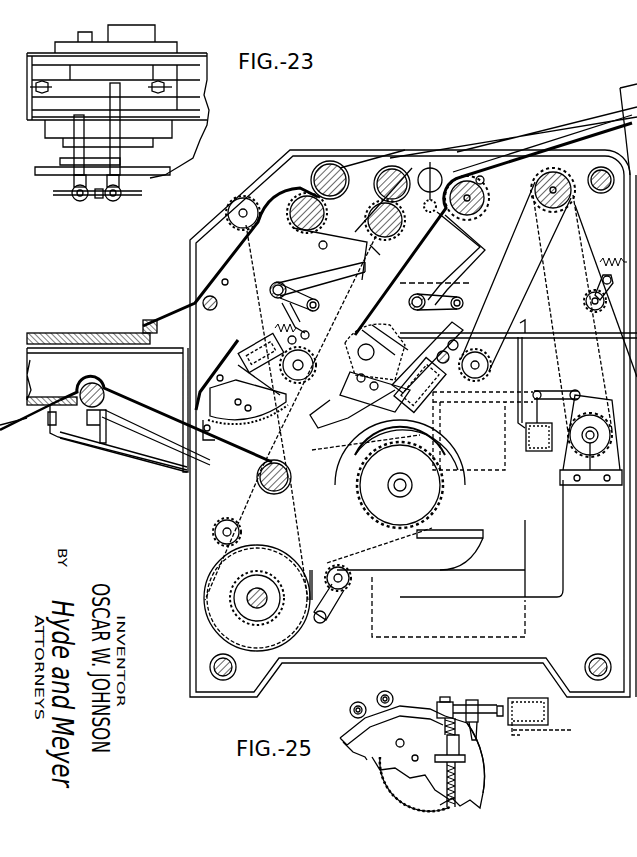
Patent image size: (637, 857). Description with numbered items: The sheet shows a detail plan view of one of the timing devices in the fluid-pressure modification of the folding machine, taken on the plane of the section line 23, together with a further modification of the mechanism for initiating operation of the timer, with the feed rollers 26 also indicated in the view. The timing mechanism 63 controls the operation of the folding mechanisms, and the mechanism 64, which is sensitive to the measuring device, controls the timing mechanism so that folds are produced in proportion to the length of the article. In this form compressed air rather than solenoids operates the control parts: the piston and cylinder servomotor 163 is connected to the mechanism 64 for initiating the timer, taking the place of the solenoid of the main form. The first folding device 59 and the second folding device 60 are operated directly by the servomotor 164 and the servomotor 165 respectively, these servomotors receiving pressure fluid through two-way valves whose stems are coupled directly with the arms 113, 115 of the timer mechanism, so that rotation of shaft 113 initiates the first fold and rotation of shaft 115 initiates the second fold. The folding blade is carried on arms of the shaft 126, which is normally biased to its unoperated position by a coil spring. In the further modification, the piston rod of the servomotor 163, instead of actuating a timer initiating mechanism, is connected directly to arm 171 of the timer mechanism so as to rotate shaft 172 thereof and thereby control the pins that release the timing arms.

In FIG. 23, the gripper fingers 23 is at (330, 347).
In FIG. 23, the feed rollers 26 is at (428, 284).
In FIG. 23, the first folding device 59 is at (499, 309).
In FIG. 23, the second folding device 60 is at (362, 309).
In FIG. 25, the timing mechanism 63 is at (367, 748).
In FIG. 23, the mechanism sensitive to the measuring device 64 is at (591, 454).
In FIG. 23, the shaft 113 is at (113, 131).
In FIG. 25, the shaft 113 is at (380, 696).
In FIG. 23, the shaft 115 is at (97, 146).
In FIG. 25, the shaft 115 is at (352, 703).
In FIG. 23, the shaft 126 is at (283, 284).
In FIG. 23, the piston and cylinder servomotor 163 is at (540, 452).
In FIG. 25, the piston and cylinder servomotor 163 is at (548, 714).
In FIG. 23, the servomotor 164 is at (458, 340).
In FIG. 23, the servomotor 165 is at (238, 336).
In FIG. 25, the arm of the timer mechanism 171 is at (437, 705).
In FIG. 25, the shaft 172 is at (452, 797).